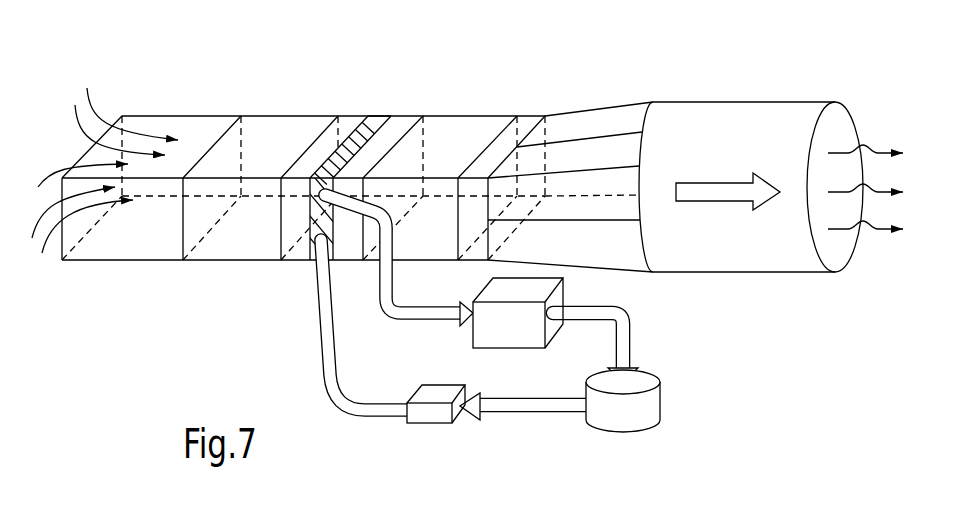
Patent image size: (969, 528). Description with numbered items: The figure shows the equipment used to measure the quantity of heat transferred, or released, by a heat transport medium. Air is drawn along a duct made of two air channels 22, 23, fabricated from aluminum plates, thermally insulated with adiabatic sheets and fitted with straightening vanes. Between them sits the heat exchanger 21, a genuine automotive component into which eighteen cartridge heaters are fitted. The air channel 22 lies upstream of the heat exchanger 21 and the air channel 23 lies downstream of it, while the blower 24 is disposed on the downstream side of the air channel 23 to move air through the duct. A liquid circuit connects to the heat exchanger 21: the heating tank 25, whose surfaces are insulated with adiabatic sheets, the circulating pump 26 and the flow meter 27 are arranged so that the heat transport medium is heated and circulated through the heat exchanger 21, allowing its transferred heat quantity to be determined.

The heat exchanger 21 is at (368, 125).
The air channel 22 is at (272, 128).
The air channel 23 is at (452, 128).
The blower 24 is at (758, 118).
The heating tank 25 is at (553, 300).
The circulating pump 26 is at (635, 420).
The flow meter 27 is at (437, 417).